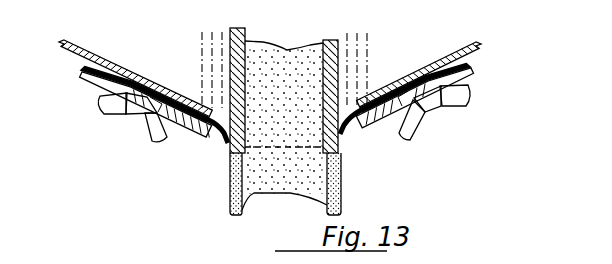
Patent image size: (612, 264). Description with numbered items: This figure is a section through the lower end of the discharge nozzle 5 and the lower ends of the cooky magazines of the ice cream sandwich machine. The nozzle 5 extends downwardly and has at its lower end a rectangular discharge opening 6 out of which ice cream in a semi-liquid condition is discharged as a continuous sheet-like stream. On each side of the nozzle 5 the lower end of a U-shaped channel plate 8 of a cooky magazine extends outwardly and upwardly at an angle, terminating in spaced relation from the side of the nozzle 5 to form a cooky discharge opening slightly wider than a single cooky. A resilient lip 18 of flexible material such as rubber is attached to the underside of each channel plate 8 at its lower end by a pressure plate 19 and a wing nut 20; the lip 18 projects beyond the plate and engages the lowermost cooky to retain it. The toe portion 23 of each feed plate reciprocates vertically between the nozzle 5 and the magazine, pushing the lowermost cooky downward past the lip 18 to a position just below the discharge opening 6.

The nozzle 5 is at (343, 67).
The discharge opening 6 is at (327, 147).
The channel plate 8 is at (101, 57).
The lip 18 is at (218, 127).
The pressure plate 19 is at (182, 125).
The wing nut 20 is at (100, 106).
The toe portion 23 is at (230, 68).